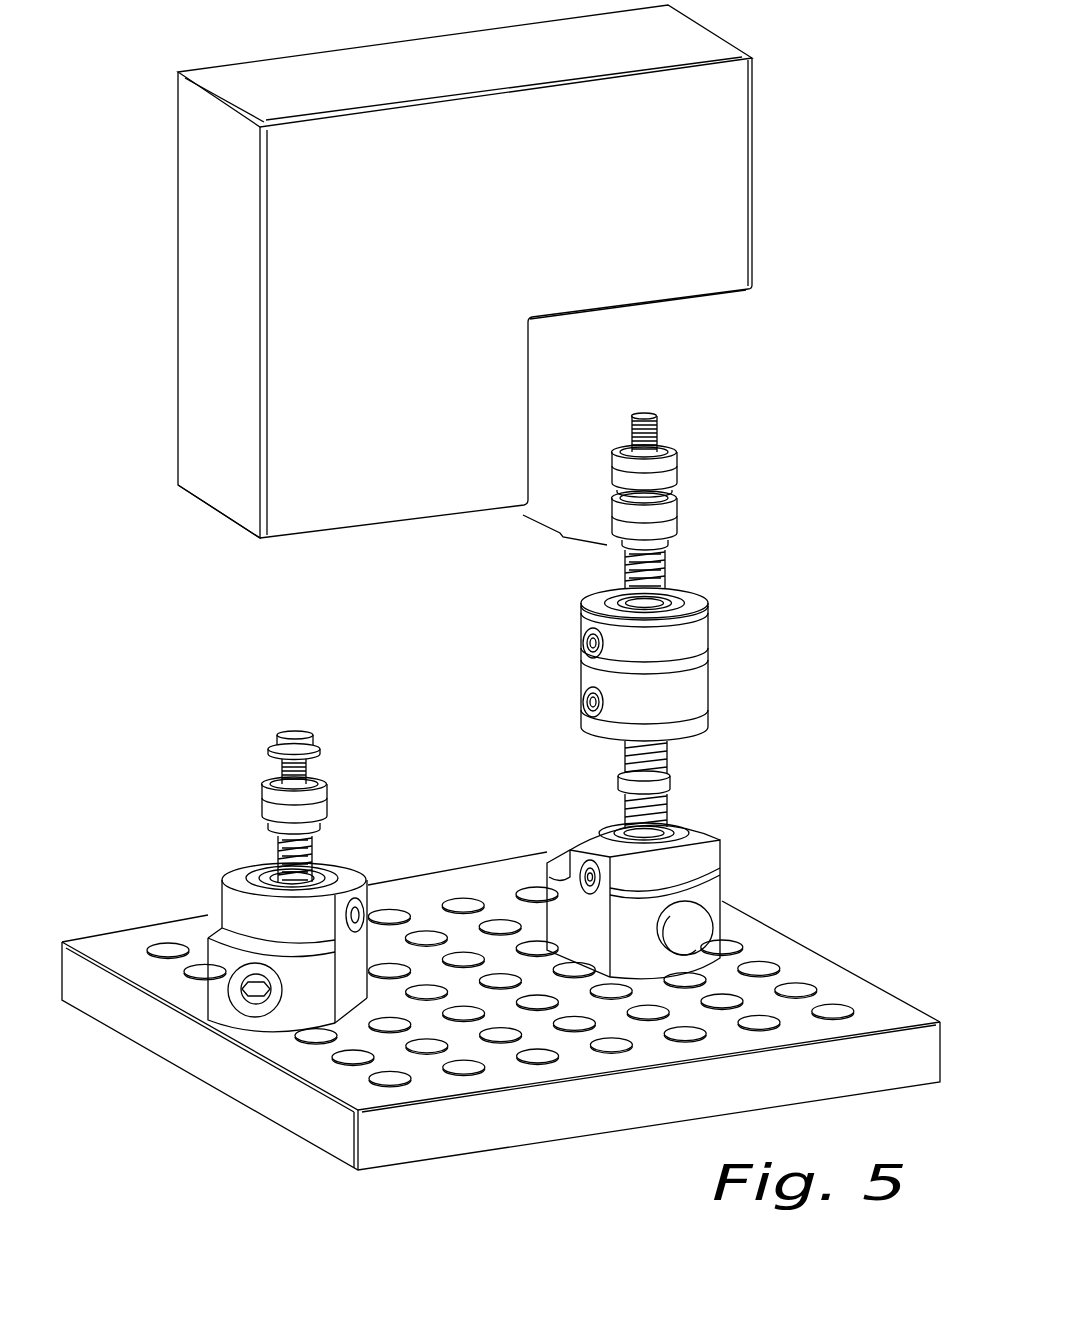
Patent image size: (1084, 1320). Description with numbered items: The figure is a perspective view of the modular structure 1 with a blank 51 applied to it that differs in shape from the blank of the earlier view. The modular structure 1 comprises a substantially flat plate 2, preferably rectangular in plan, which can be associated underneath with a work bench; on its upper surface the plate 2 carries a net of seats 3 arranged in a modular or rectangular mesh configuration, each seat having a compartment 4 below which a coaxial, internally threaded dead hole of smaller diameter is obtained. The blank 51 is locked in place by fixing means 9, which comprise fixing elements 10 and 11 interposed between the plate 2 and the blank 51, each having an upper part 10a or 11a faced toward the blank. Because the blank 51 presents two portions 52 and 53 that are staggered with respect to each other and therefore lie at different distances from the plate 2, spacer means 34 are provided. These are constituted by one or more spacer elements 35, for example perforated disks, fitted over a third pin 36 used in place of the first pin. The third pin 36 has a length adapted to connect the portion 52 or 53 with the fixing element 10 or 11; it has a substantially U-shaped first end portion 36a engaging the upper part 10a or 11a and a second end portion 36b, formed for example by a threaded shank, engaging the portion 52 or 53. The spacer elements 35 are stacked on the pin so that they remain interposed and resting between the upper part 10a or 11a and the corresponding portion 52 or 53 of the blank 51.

The modular structure 1 is at (129, 619).
The plate 2 is at (100, 926).
The seats 3 is at (770, 960).
The compartment 4 is at (203, 818).
The fixing means 9 is at (552, 652).
The fixing element 10 is at (722, 670).
The upper part 10a is at (695, 642).
The fixing element 11 is at (380, 900).
The upper part 11a is at (242, 908).
The spacer means 34 is at (247, 766).
The spacer elements 35 is at (338, 786).
The third pin 36 is at (325, 850).
The first end portion 36a is at (275, 860).
The second end portion 36b is at (325, 760).
The blank 51 is at (772, 227).
The portion 52 is at (713, 293).
The portion 53 is at (300, 537).